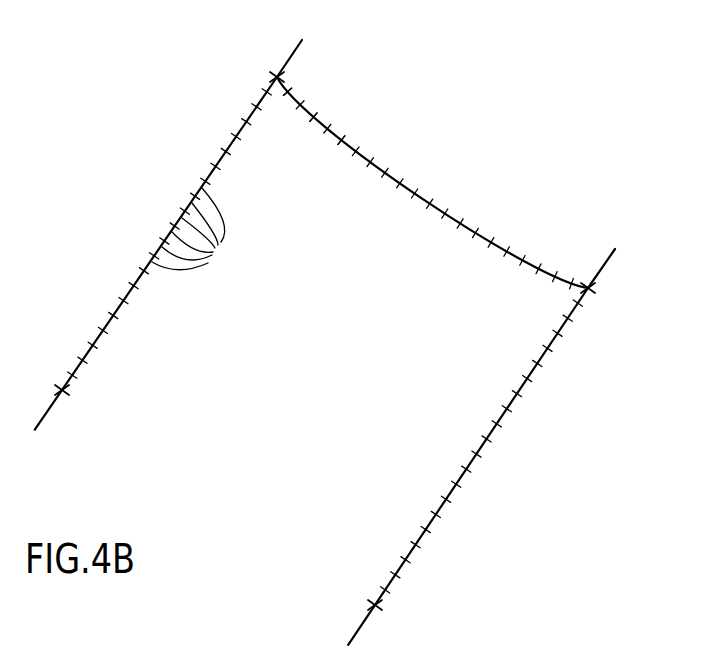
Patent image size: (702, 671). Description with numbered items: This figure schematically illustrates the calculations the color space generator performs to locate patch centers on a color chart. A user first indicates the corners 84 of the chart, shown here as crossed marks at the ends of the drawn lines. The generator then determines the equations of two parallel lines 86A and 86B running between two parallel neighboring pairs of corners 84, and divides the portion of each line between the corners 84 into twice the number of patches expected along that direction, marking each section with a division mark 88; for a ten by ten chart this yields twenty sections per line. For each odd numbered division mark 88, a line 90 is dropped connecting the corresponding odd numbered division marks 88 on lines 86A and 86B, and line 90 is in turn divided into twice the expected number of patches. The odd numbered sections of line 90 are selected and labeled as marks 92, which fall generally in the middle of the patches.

The intersection mark / fiducial point 84 is at (279, 70).
The first side line 86A is at (295, 50).
The second side line 86B is at (603, 264).
The tick mark group 88 is at (200, 229).
The top line 90 is at (416, 192).
The tick mark leaders 92 is at (283, 96).